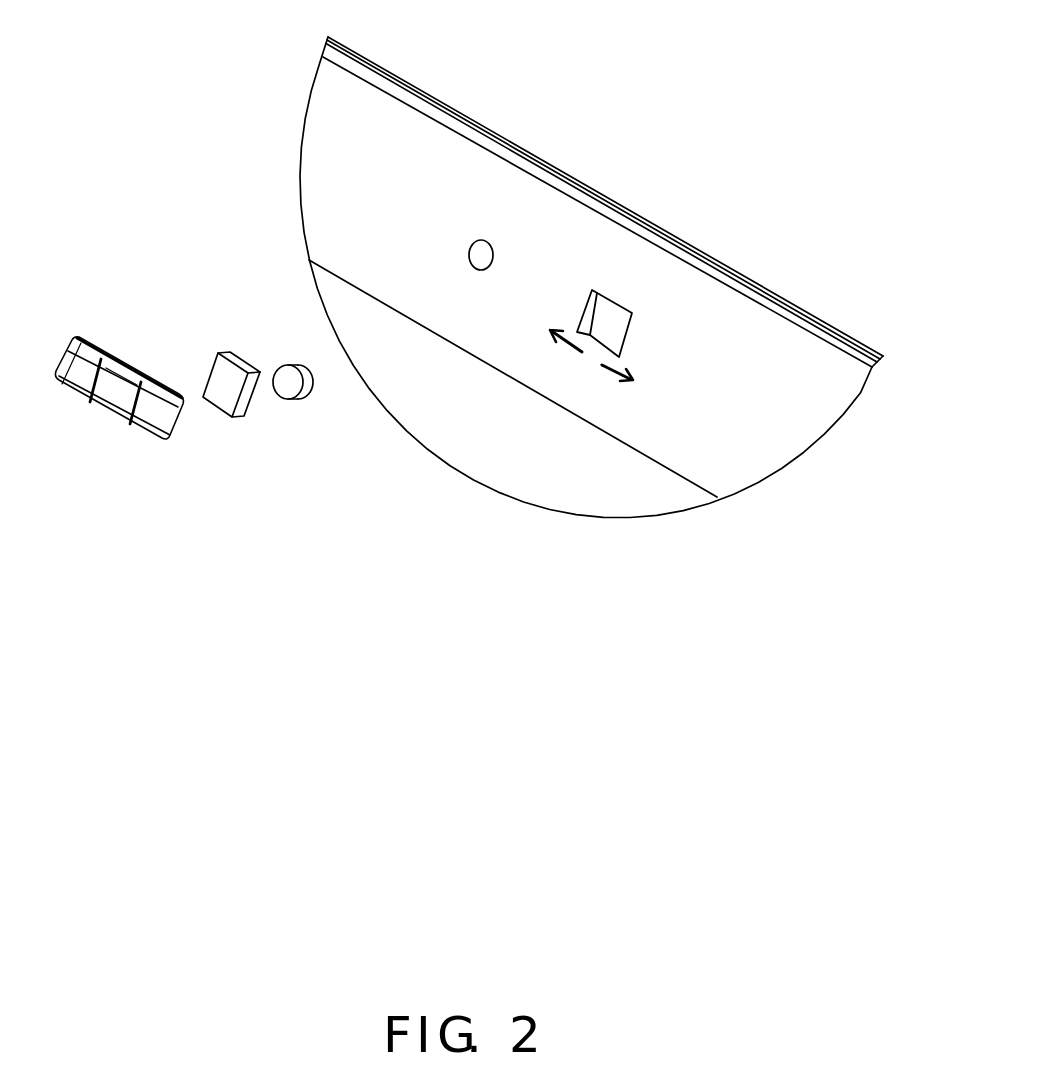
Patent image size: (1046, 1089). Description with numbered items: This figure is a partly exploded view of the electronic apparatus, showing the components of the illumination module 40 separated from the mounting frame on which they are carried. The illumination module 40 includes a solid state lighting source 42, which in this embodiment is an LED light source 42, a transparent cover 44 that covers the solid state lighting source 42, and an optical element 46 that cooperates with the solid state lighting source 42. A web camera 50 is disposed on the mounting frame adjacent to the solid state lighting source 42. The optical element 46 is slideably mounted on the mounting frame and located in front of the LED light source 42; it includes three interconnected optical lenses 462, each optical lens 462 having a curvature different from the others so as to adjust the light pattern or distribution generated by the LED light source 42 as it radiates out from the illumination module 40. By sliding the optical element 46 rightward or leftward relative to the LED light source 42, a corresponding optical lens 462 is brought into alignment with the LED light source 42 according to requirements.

The illumination module 40 is at (330, 545).
The solid state lighting source 42 is at (295, 387).
The transparent cover 44 is at (233, 393).
The optical element 46 is at (148, 420).
The optical lens 462 is at (117, 383).
The web camera 50 is at (482, 250).